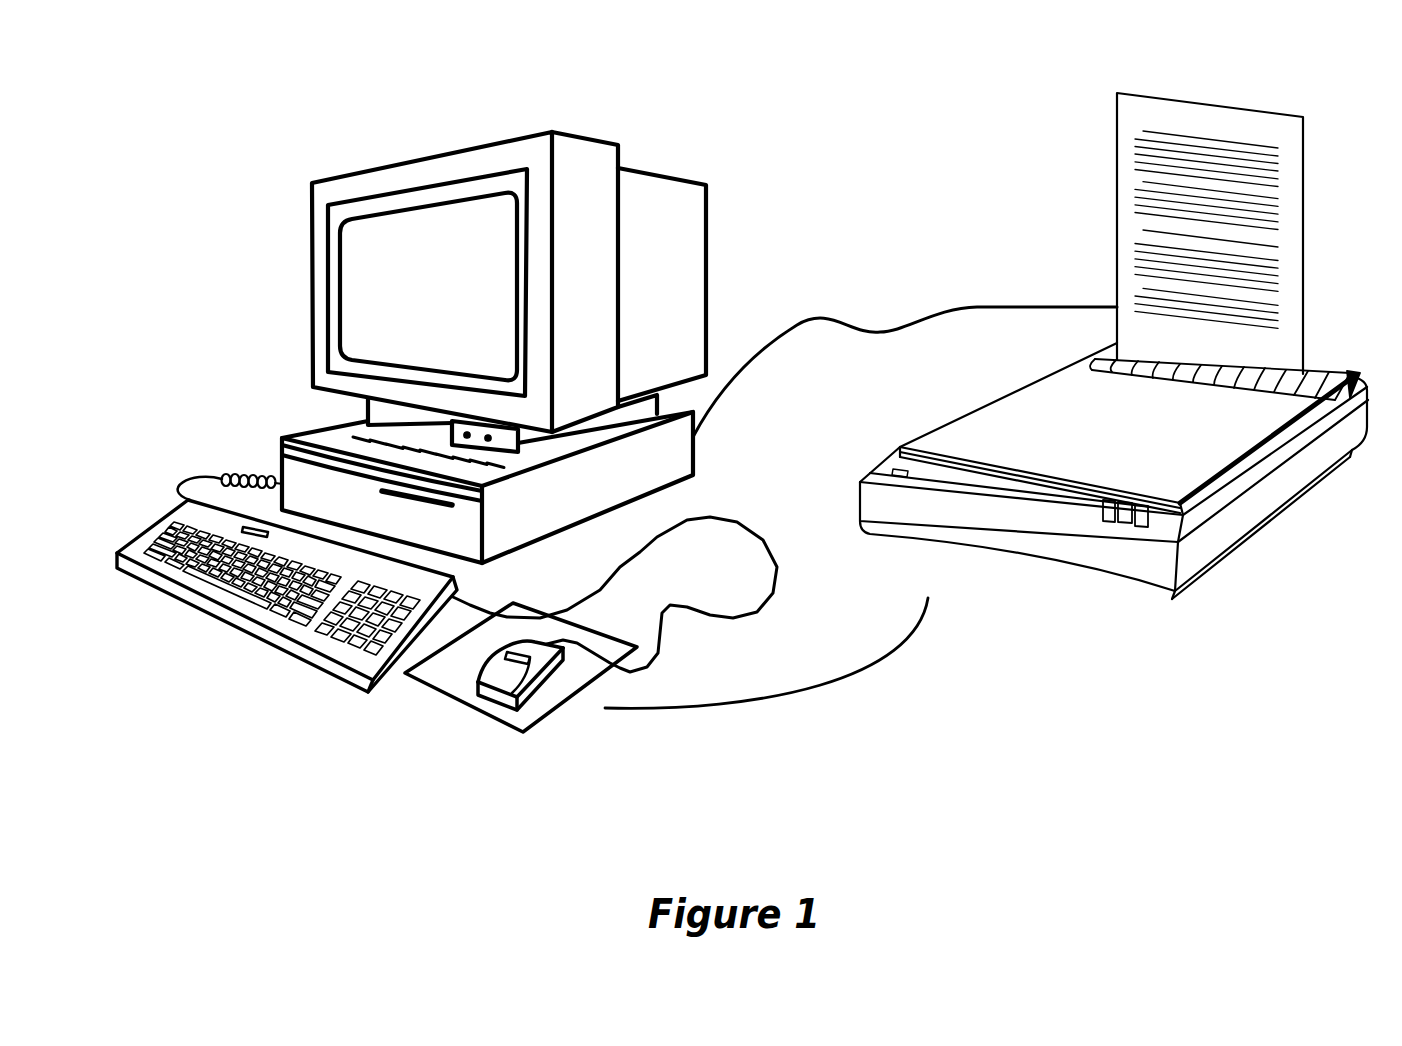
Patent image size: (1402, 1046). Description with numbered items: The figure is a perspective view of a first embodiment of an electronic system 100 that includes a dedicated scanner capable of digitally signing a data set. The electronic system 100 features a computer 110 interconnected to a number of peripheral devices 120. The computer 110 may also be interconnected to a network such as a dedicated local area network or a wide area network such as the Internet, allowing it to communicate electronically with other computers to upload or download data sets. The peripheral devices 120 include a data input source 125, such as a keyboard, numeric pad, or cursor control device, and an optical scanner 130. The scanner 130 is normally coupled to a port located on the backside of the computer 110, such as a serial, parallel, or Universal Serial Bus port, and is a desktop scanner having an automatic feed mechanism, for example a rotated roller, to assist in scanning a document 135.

The electronic system 100 is at (782, 138).
The computer 110 is at (207, 222).
The peripheral devices 120 is at (766, 689).
The data input source 125 is at (262, 697).
The optical scanner 130 is at (1242, 570).
The document 135 is at (1303, 207).